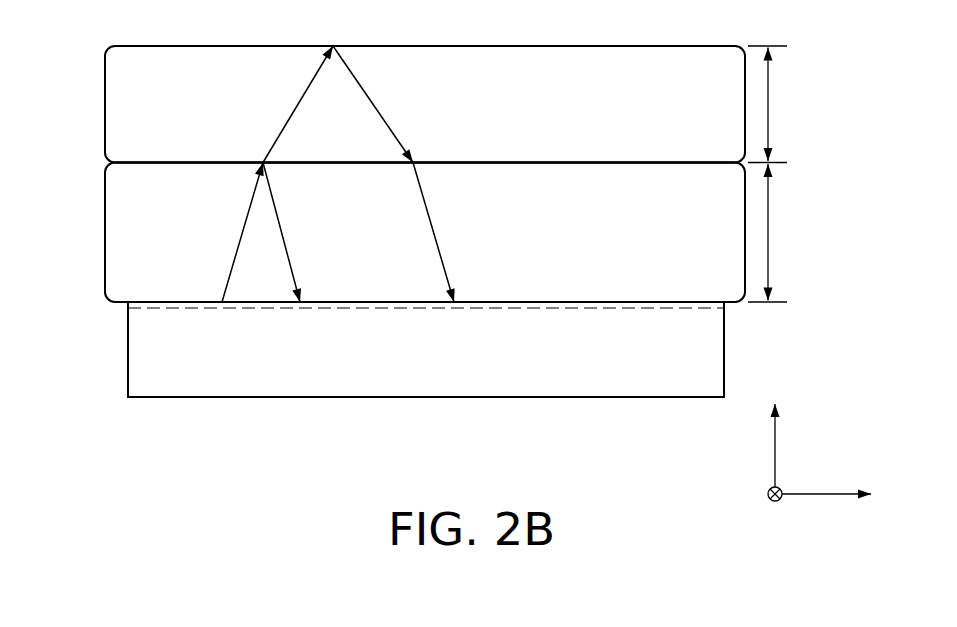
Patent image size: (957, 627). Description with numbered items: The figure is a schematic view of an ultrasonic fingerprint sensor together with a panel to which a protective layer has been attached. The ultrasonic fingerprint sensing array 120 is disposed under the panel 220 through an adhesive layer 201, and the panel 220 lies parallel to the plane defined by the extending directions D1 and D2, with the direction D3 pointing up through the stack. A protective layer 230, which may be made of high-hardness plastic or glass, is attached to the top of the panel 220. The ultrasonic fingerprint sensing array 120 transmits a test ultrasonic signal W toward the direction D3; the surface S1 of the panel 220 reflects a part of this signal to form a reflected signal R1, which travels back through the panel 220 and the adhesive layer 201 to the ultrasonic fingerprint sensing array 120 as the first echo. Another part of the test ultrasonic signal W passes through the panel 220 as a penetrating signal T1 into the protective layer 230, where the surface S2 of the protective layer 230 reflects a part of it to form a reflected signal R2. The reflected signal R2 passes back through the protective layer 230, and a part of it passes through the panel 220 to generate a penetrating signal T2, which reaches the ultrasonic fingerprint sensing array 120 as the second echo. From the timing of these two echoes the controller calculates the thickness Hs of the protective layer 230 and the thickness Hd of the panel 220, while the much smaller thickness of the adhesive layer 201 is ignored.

The protective layer 230 is at (113, 106).
The panel 220 is at (113, 240).
The surface of the protective layer S2 is at (168, 49).
The surface of the panel S1 is at (168, 165).
The adhesive layer 201 is at (125, 303).
The ultrasonic fingerprint sensing array 120 is at (130, 385).
The penetrating signal T1 is at (296, 103).
The reflected signal R2 is at (375, 100).
The penetrating signal T2 is at (437, 235).
The test ultrasonic signal W is at (233, 246).
The reflected signal R1 is at (287, 248).
The thickness of the protective layer Hs is at (780, 104).
The thickness of the panel Hd is at (781, 233).
The extending direction D1 is at (843, 495).
The extending direction D2 is at (757, 500).
The direction D3 is at (776, 430).